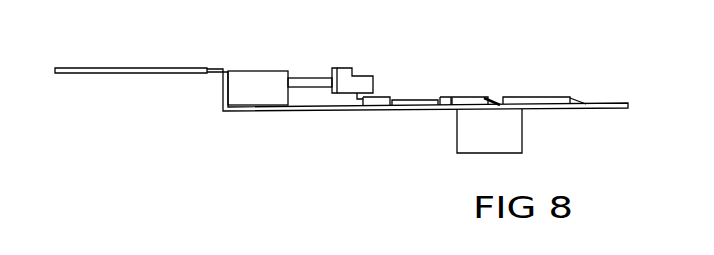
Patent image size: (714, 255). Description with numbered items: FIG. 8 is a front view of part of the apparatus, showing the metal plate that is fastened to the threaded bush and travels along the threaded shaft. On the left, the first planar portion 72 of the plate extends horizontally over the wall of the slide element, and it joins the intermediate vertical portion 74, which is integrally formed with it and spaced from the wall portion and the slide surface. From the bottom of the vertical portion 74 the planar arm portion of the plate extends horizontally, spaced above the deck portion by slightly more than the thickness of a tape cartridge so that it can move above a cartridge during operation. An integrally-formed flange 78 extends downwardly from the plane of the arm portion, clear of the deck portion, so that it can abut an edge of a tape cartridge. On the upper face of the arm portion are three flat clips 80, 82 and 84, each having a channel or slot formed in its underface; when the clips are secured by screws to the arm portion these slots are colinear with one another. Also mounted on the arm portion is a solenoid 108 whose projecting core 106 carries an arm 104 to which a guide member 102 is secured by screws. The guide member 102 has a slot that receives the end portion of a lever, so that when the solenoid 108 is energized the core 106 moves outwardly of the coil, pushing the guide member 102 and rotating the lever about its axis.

The first planar portion 72 is at (133, 68).
The intermediate vertical portion 74 is at (226, 99).
The flange 78 is at (520, 148).
The flat clip 80 is at (415, 97).
The flat clip 82 is at (467, 96).
The flat clip 84 is at (550, 97).
The guide member 102 is at (362, 80).
The arm 104 is at (336, 68).
The core 106 is at (317, 82).
The solenoid 108 is at (266, 97).